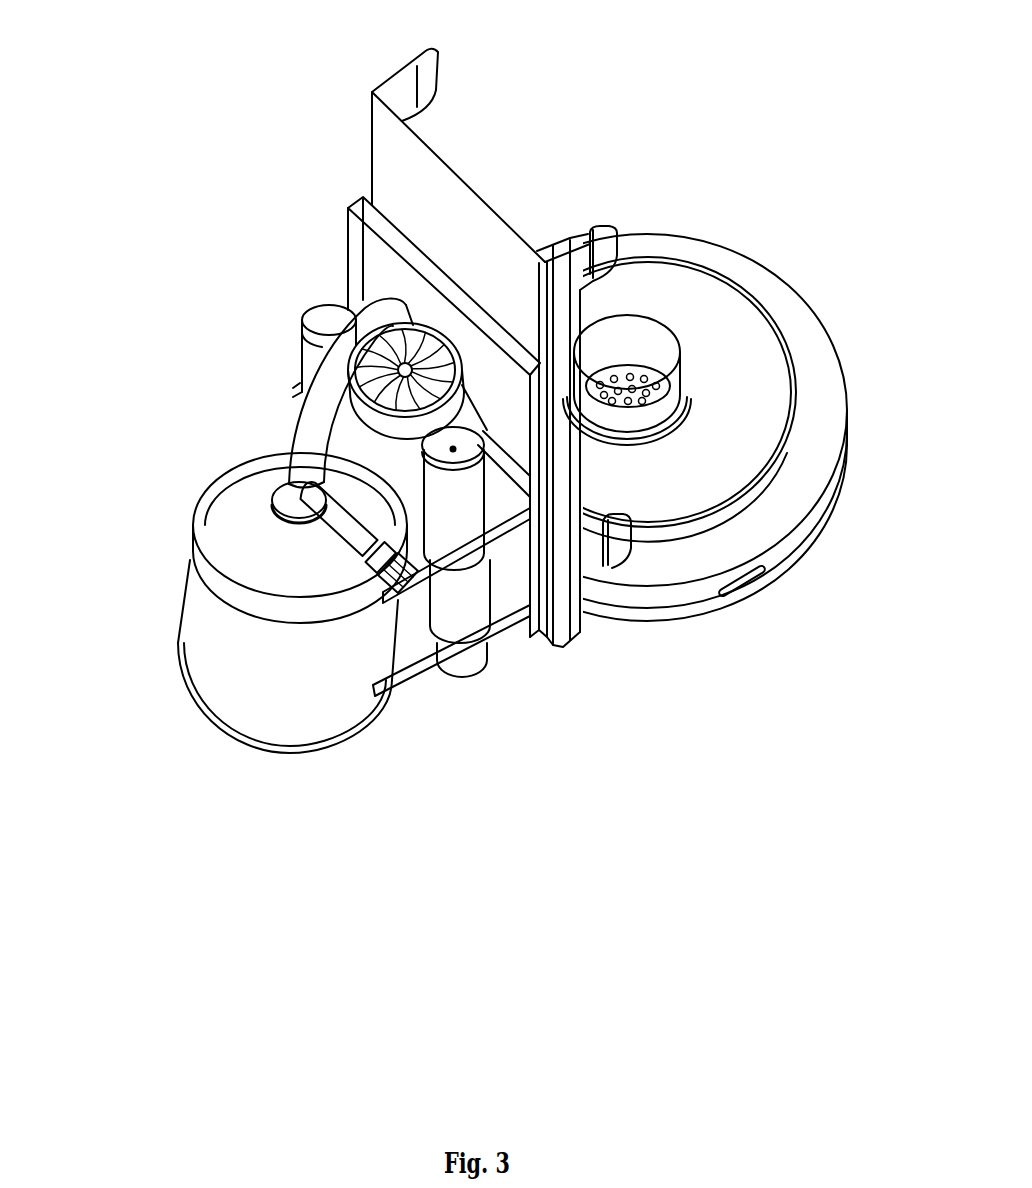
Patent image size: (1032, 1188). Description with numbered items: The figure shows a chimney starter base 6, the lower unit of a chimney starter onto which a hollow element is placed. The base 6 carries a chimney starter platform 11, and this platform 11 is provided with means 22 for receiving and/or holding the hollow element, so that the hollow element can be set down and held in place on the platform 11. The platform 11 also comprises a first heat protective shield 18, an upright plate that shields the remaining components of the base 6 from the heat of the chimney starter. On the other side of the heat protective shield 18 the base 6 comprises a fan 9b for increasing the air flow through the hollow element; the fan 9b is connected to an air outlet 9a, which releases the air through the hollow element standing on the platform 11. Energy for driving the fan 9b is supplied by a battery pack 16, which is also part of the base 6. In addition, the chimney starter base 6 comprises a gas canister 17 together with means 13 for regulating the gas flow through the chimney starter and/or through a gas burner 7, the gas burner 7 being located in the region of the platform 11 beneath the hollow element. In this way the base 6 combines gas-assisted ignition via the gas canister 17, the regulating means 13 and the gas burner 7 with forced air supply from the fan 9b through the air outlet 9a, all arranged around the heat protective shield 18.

The chimney starter base 6 is at (693, 611).
The gas burner 7 is at (679, 382).
The air outlet 9a is at (635, 336).
The fan 9b is at (387, 348).
The chimney starter platform 11 is at (736, 520).
The means for regulating the gas flow 13 is at (341, 546).
The battery pack 16 is at (458, 609).
The gas canister 17 is at (218, 510).
The first heat protective shield 18 is at (394, 178).
The means for receiving and/or holding the hollow element 22 is at (423, 76).